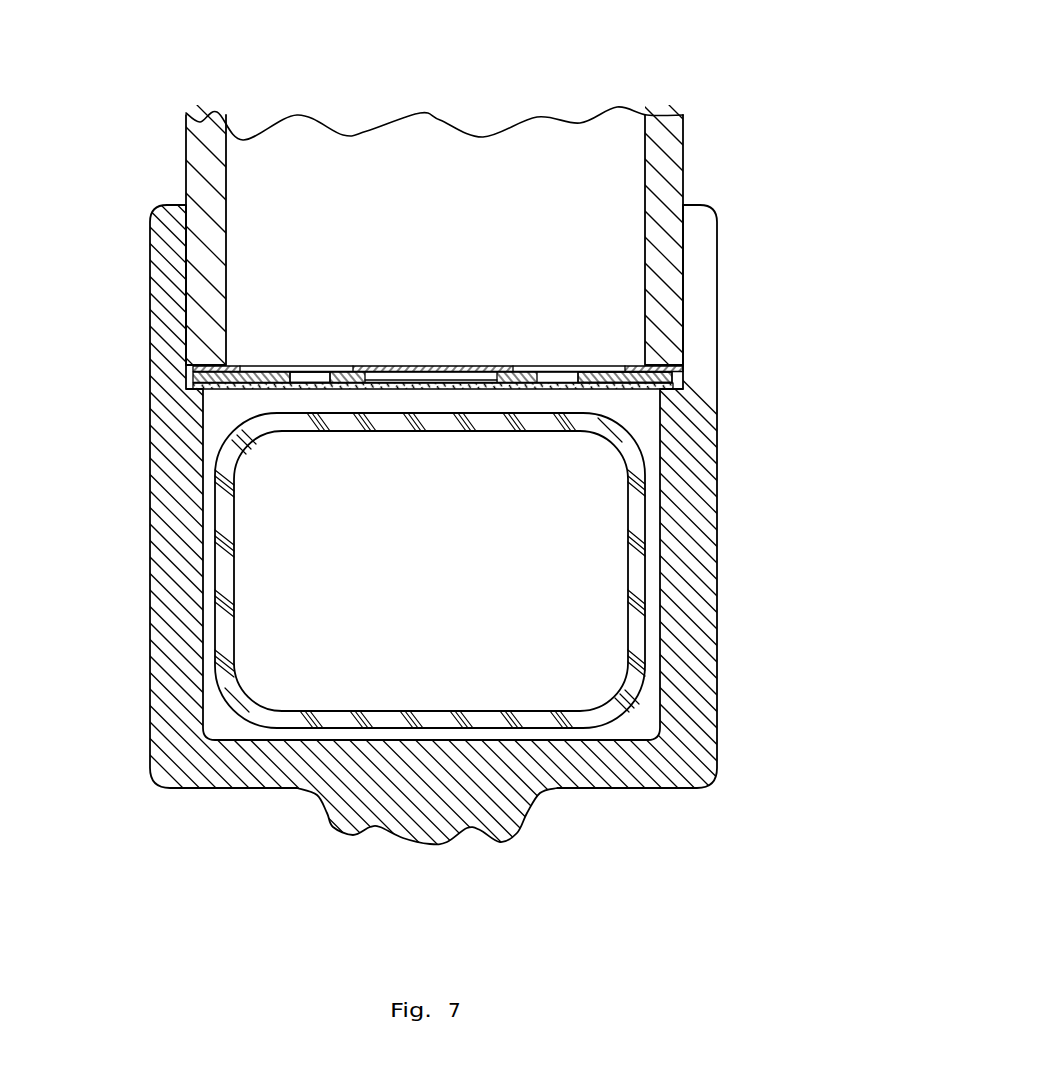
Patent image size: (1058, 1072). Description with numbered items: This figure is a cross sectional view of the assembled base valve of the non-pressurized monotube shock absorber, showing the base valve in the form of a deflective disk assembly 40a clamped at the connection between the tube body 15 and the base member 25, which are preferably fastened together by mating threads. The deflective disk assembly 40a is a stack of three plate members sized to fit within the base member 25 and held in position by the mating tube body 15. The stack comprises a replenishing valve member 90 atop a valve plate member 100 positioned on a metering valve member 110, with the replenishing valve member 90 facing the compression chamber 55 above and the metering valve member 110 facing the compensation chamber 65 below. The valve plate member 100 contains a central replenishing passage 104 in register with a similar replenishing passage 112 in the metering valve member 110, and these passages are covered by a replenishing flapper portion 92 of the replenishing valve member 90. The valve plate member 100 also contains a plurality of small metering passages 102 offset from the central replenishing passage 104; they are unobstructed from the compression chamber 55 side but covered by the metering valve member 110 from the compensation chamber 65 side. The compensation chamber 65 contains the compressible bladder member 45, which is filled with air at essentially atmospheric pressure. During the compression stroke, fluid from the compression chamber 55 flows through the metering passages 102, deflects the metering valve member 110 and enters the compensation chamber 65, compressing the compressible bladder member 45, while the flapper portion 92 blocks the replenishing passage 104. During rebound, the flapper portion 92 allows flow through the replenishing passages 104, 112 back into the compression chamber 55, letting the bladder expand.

The tube body 15 is at (467, 185).
The base member 25 is at (529, 525).
The compressible bladder member 45 is at (517, 570).
The compression chamber 55 is at (720, 145).
The deflective disk assembly 40a is at (722, 223).
The compensation chamber 65 is at (732, 477).
The replenishing valve member 90 is at (429, 353).
The replenishing flapper portion 92 is at (364, 243).
The valve plate member 100 is at (701, 341).
The metering passages 102 is at (183, 296).
The central replenishing passage 104 is at (352, 448).
The metering valve member 110 is at (741, 422).
The replenishing passage 112 is at (353, 488).